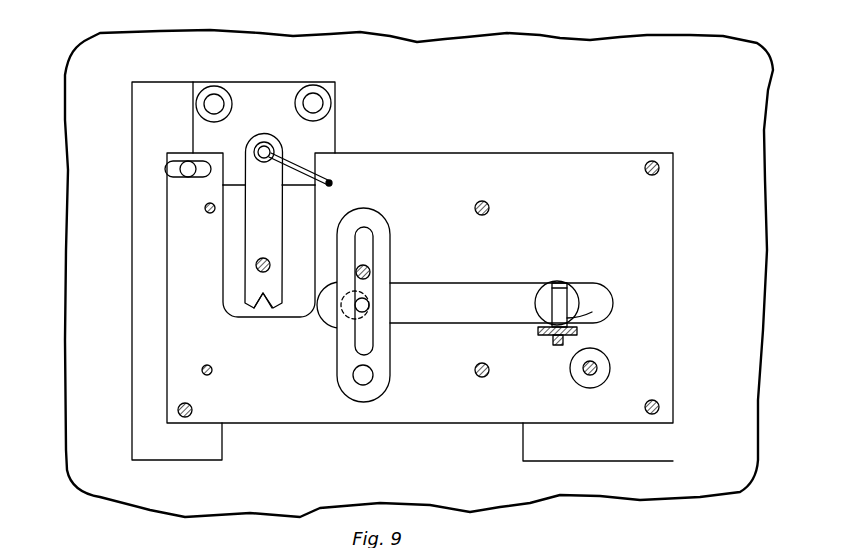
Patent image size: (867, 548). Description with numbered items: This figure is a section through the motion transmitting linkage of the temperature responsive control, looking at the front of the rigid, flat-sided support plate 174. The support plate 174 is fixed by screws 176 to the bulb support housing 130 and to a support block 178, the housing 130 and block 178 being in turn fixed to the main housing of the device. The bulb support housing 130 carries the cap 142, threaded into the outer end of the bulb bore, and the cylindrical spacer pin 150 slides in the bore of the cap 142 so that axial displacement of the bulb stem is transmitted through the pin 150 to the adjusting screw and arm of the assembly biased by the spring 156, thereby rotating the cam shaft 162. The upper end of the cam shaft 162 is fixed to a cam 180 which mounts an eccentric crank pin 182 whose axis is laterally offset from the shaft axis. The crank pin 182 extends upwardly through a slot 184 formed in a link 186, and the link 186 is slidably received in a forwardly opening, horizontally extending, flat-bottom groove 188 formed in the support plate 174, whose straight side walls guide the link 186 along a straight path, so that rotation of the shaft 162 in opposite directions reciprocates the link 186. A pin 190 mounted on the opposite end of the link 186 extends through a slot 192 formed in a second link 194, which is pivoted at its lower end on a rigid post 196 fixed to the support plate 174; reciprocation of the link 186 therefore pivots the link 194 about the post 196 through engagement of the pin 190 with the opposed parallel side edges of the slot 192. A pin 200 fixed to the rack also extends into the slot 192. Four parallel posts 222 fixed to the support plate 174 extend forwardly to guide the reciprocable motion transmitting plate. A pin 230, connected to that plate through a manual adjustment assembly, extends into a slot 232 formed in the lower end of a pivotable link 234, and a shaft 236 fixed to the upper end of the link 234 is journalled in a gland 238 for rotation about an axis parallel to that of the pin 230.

The bulb support housing 130 is at (655, 455).
The cap 142 is at (576, 382).
The spacer pin 150 is at (598, 366).
The spring 156 is at (292, 156).
The cam shaft 162 is at (556, 344).
The support plate 174 is at (324, 423).
The screws 176 is at (188, 166).
The support block 178 is at (132, 247).
The cam 180 is at (540, 331).
The eccentric crank pin 182 is at (558, 285).
The slot 184 is at (575, 305).
The link 186 is at (528, 283).
The groove 188 is at (425, 283).
The pin 190 is at (370, 305).
The slot 192 is at (371, 233).
The link 194 is at (348, 207).
The post 196 is at (371, 383).
The pin 200 is at (368, 268).
The posts 222 is at (207, 214).
The pin 230 is at (257, 268).
The slot 232 is at (268, 302).
The link 234 is at (252, 178).
The shaft 236 is at (273, 145).
The gland 238 is at (282, 90).